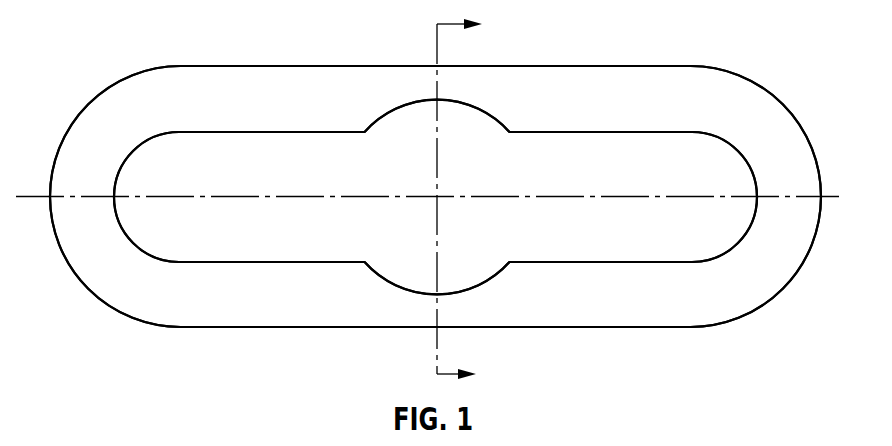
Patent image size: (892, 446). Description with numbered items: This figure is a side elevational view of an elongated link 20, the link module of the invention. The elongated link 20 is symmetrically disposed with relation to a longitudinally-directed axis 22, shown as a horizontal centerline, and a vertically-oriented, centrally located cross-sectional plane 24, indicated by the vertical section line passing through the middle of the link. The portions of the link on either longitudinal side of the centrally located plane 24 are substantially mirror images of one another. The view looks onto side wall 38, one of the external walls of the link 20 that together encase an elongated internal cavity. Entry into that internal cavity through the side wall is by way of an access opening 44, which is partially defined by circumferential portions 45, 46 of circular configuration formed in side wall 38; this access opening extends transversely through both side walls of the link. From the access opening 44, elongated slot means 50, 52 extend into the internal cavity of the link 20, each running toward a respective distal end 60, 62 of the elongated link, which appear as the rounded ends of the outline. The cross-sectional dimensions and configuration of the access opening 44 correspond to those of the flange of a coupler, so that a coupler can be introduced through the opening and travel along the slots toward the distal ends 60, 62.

The elongated link 20 is at (257, 346).
The longitudinally-directed axis 22 is at (28, 188).
The vertically-oriented centrally located cross-sectional plane 24 is at (437, 55).
The side wall 38 is at (324, 110).
The access opening 44 is at (480, 109).
The circumferential portion 45 is at (484, 172).
The circumferential portion 46 is at (397, 284).
The elongated slot means 50 is at (199, 168).
The elongated slot means 52 is at (678, 153).
The distal end 60 is at (68, 212).
The distal end 62 is at (800, 225).